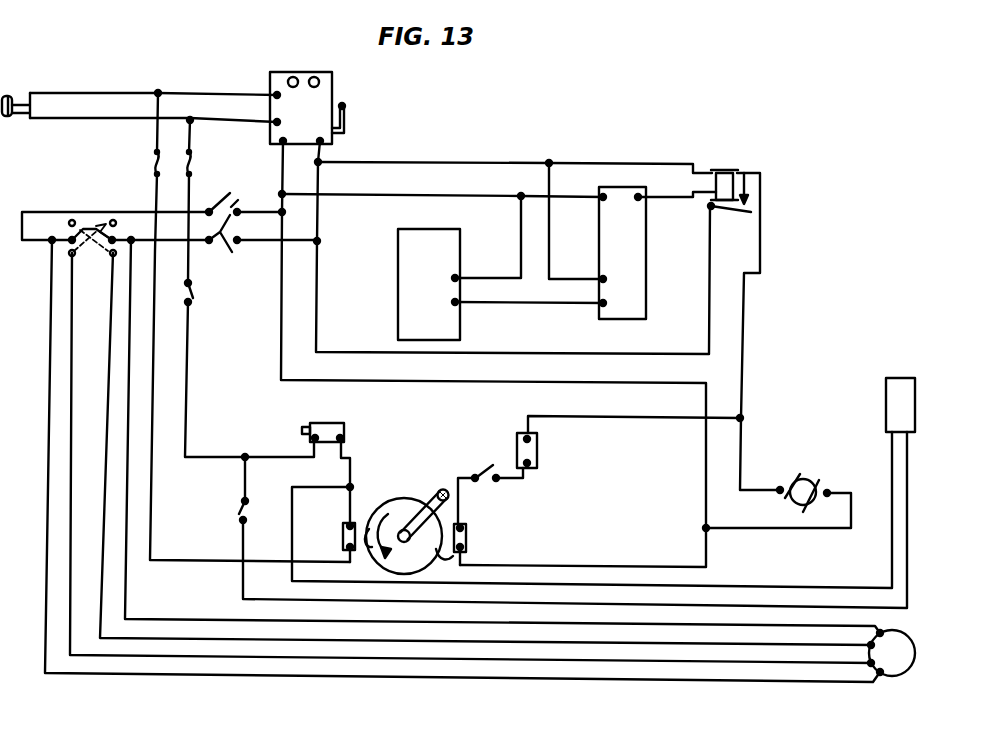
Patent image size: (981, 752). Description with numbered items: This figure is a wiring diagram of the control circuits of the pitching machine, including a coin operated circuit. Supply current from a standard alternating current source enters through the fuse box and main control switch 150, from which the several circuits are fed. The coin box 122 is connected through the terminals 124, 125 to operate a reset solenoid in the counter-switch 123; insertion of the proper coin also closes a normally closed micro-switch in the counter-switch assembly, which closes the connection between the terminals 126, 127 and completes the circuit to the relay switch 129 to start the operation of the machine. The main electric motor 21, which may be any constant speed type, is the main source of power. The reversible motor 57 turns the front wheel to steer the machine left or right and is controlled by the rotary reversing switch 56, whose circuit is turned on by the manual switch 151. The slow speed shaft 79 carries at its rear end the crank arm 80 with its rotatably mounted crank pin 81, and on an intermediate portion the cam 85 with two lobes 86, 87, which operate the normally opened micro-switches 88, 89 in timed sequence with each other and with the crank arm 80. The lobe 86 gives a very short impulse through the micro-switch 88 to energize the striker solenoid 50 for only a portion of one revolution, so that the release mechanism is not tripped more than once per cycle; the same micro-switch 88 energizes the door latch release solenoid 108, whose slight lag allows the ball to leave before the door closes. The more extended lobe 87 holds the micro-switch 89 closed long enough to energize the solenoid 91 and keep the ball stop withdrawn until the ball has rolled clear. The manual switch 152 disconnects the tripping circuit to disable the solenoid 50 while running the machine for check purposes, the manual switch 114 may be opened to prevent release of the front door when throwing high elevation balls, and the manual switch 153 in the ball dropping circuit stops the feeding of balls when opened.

The fuse box and main control switch 150 is at (320, 97).
The rotary reversing switch 56 is at (60, 250).
The manual switch 151 is at (261, 232).
The manual switch 152 is at (194, 297).
The coin box 122 is at (414, 281).
The counter-switch 123 is at (635, 265).
The terminal 124 is at (601, 278).
The terminal 125 is at (601, 305).
The terminal 126 is at (604, 195).
The terminal 127 is at (639, 195).
The relay switch 129 is at (729, 170).
The door latch release solenoid 108 is at (910, 395).
The solenoid 50 is at (333, 431).
The manual switch 114 is at (242, 508).
The cam 85 is at (392, 511).
The crank arm 80 is at (434, 501).
The crank pin 81 is at (443, 489).
The slow speed shaft 79 is at (405, 542).
The micro-switch 88 is at (342, 535).
The cam lobe 86 is at (363, 555).
The cam lobe 87 is at (466, 556).
The micro-switch 89 is at (466, 531).
The manual switch 153 is at (490, 469).
The solenoid 91 is at (538, 452).
The electric motor 21 is at (815, 481).
The reversible motor 57 is at (902, 650).